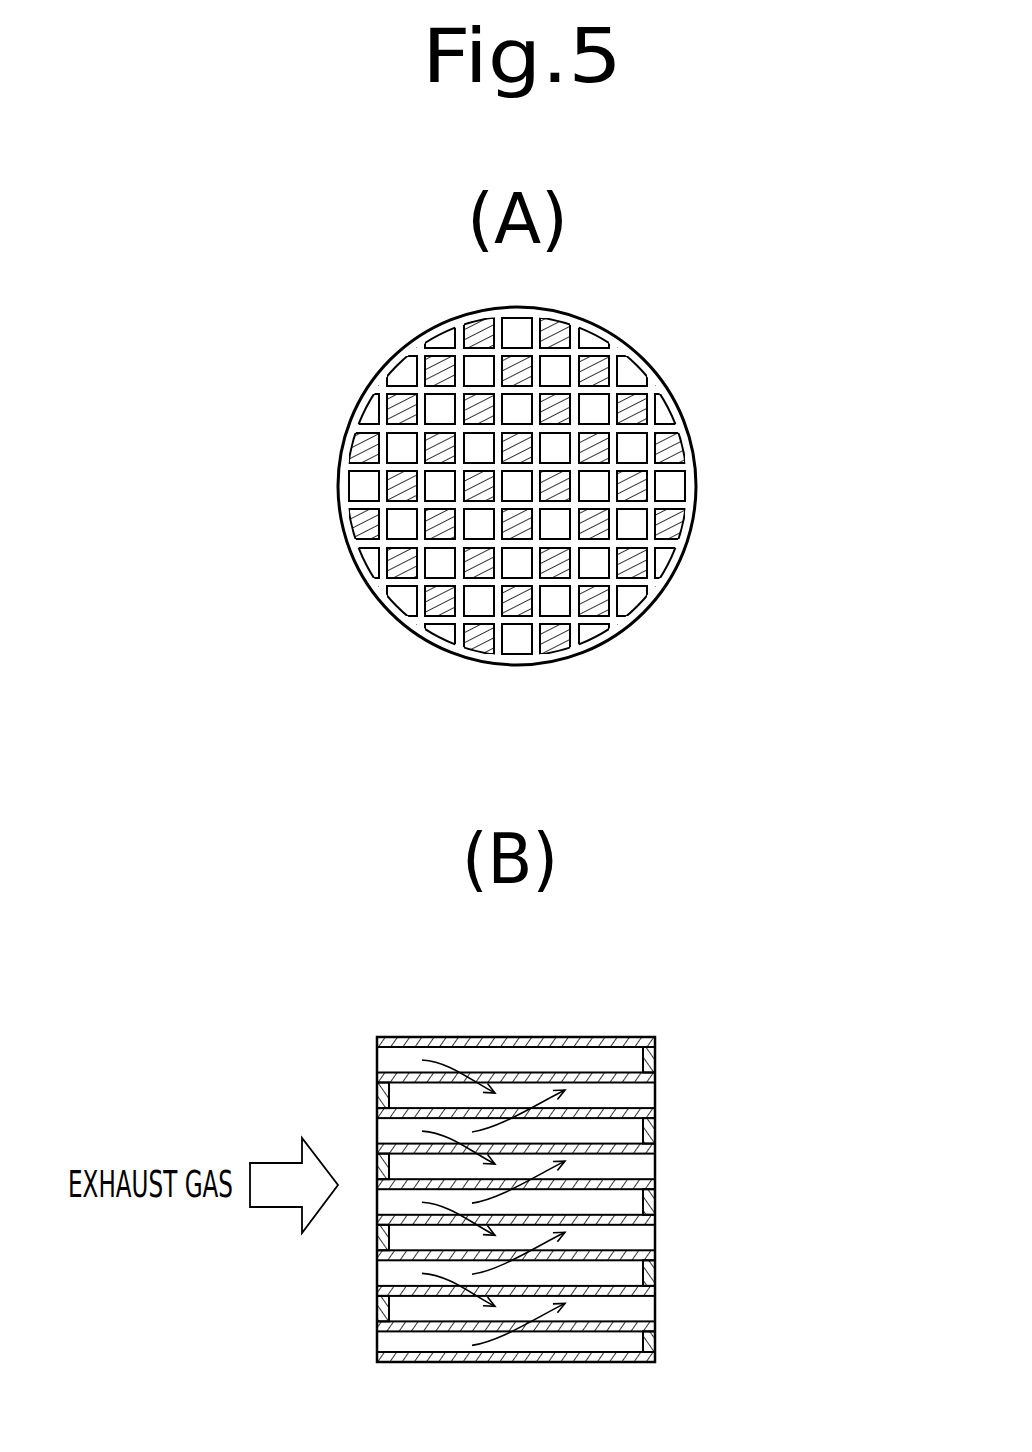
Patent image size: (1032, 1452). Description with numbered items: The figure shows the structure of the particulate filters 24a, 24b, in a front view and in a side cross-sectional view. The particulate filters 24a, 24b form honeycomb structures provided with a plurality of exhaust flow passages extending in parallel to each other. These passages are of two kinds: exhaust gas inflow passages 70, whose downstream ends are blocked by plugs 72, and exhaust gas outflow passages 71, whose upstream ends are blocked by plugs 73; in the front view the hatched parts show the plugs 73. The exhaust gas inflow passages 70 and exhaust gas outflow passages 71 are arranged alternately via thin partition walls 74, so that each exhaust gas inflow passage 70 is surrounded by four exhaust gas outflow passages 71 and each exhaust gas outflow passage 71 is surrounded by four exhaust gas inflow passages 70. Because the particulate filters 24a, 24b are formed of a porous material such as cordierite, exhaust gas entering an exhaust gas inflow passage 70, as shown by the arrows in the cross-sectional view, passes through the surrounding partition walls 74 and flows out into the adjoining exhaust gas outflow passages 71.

The particulate filter 24a is at (650, 360).
The particulate filter 24b is at (589, 828).
The exhaust gas inflow passage 70 is at (637, 449).
The exhaust gas outflow passage 71 is at (417, 1095).
The plug 72 is at (657, 1062).
The plug 73 is at (597, 598).
The partition wall 74 is at (485, 620).